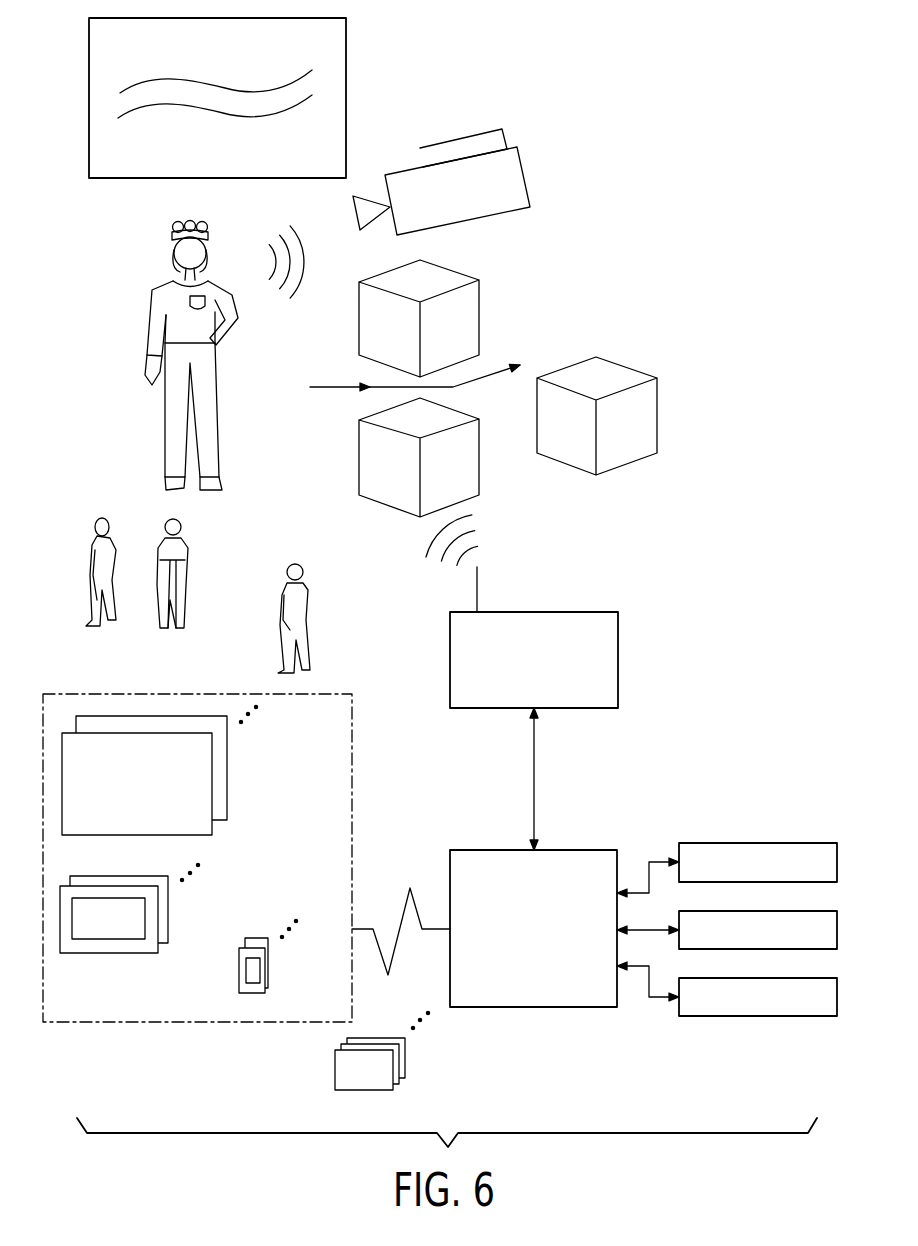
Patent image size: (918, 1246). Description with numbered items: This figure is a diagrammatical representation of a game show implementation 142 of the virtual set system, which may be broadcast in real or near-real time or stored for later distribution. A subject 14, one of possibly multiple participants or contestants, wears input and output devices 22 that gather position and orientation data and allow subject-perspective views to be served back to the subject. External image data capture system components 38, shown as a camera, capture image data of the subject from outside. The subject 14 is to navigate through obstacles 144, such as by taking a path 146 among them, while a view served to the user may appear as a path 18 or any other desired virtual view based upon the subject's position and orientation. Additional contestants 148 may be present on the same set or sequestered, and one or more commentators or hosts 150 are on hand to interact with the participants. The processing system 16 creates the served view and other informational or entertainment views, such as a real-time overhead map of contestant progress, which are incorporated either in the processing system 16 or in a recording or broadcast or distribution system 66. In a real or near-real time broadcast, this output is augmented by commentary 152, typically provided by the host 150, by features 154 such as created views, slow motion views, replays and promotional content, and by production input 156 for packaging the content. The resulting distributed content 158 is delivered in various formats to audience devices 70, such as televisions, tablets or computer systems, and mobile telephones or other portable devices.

The subject 14 is at (165, 342).
The processing system 16 is at (620, 660).
The path view 18 is at (347, 98).
The input and output devices 22 is at (170, 234).
The external image data capture system components 38 is at (530, 178).
The recording or broadcast or distribution system 66 is at (533, 1007).
The audience devices 70 is at (195, 1025).
The game show implementation 142 is at (707, 182).
The obstacles 144 is at (480, 318).
The path 146 is at (482, 382).
The spectators 148 is at (155, 580).
The commentators or hosts 150 is at (305, 633).
The commentary 152 is at (762, 843).
The features 154 is at (758, 911).
The production input 156 is at (758, 1016).
The distributed content 158 is at (335, 1068).